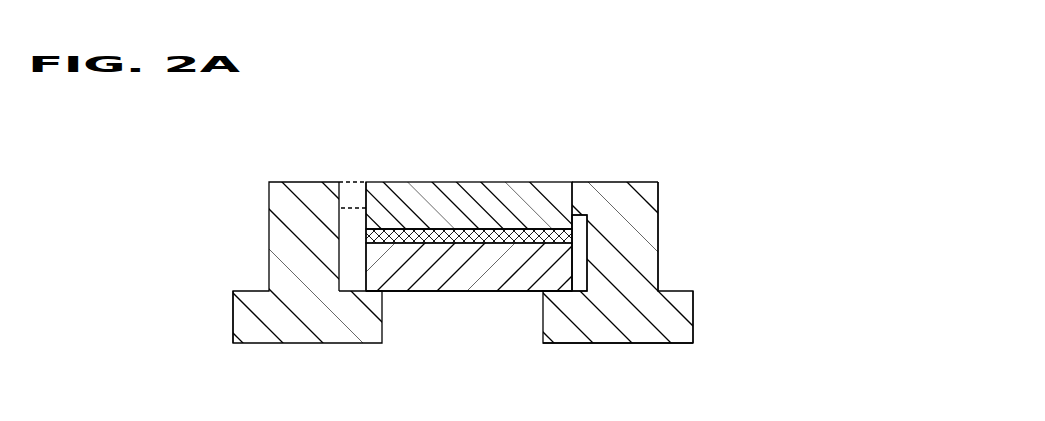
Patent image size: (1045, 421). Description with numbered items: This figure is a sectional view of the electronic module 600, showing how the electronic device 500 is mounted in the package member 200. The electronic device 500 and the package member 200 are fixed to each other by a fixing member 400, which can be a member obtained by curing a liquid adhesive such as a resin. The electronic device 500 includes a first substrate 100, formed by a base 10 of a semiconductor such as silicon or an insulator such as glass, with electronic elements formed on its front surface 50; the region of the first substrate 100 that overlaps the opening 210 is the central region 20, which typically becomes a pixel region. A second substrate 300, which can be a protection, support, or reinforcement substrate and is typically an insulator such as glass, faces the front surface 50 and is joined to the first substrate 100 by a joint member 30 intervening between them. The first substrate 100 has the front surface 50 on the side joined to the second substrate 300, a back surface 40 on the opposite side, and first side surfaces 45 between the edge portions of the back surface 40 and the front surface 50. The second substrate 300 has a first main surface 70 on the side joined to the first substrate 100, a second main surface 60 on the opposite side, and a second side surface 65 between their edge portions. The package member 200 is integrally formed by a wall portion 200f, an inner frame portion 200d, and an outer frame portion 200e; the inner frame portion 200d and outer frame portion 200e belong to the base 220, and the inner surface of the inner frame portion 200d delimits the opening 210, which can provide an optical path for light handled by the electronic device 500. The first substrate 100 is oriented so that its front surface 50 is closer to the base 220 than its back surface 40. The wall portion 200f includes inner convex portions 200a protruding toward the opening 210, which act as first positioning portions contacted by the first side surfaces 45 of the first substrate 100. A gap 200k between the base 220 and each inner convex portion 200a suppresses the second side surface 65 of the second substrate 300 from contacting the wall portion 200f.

The base 10 is at (446, 200).
The central region 20 is at (503, 225).
The joint member 30 is at (394, 212).
The back surface 40 is at (552, 182).
The first side surfaces 45 is at (365, 216).
The front surface 50 is at (412, 237).
The second main surface 60 is at (448, 291).
The second side surface 65 is at (363, 277).
The first main surface 70 is at (491, 246).
The first substrate 100 is at (520, 130).
The package member 200 is at (307, 182).
The inner convex portions 200a is at (583, 182).
The inner frame portion 200d is at (556, 310).
The outer frame portion 200e is at (673, 303).
The wall portion 200f is at (658, 220).
The gap 200k is at (576, 250).
The opening 210 is at (420, 322).
The base 220 is at (228, 296).
The second substrate 300 is at (547, 262).
The fixing member 400 is at (355, 197).
The electronic device 500 is at (568, 92).
The device 600 is at (660, 52).